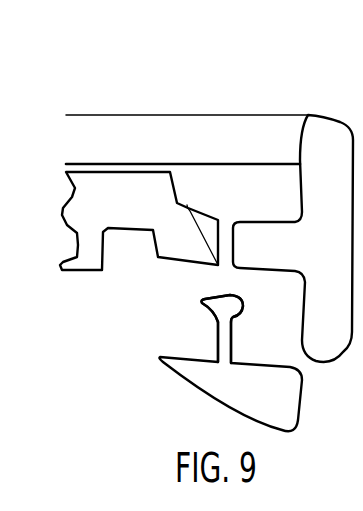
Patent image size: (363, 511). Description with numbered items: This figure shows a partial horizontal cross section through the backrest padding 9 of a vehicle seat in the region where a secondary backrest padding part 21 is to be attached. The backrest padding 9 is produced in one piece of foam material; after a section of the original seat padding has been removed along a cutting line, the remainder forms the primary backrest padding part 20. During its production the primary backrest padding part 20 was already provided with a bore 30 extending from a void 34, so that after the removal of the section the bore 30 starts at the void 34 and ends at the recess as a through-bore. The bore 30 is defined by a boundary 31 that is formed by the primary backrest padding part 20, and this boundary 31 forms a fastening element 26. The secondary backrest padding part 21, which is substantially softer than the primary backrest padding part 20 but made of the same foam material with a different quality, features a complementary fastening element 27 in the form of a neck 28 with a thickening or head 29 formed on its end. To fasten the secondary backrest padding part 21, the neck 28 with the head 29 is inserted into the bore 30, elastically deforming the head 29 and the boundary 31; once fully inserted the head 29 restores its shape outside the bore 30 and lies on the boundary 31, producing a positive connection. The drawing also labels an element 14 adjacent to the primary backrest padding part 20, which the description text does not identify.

The sealing profile 9 is at (201, 230).
The plate / pane 14 is at (110, 130).
The base body of profile 20 is at (335, 138).
The second profile part 21 is at (207, 385).
The tongue 26 is at (187, 205).
The connecting web 27 is at (146, 325).
The neck portion 28 is at (223, 338).
The head portion 29 is at (203, 298).
The gap / slot 30 is at (227, 228).
The lip 31 is at (217, 220).
The recess 34 is at (283, 200).